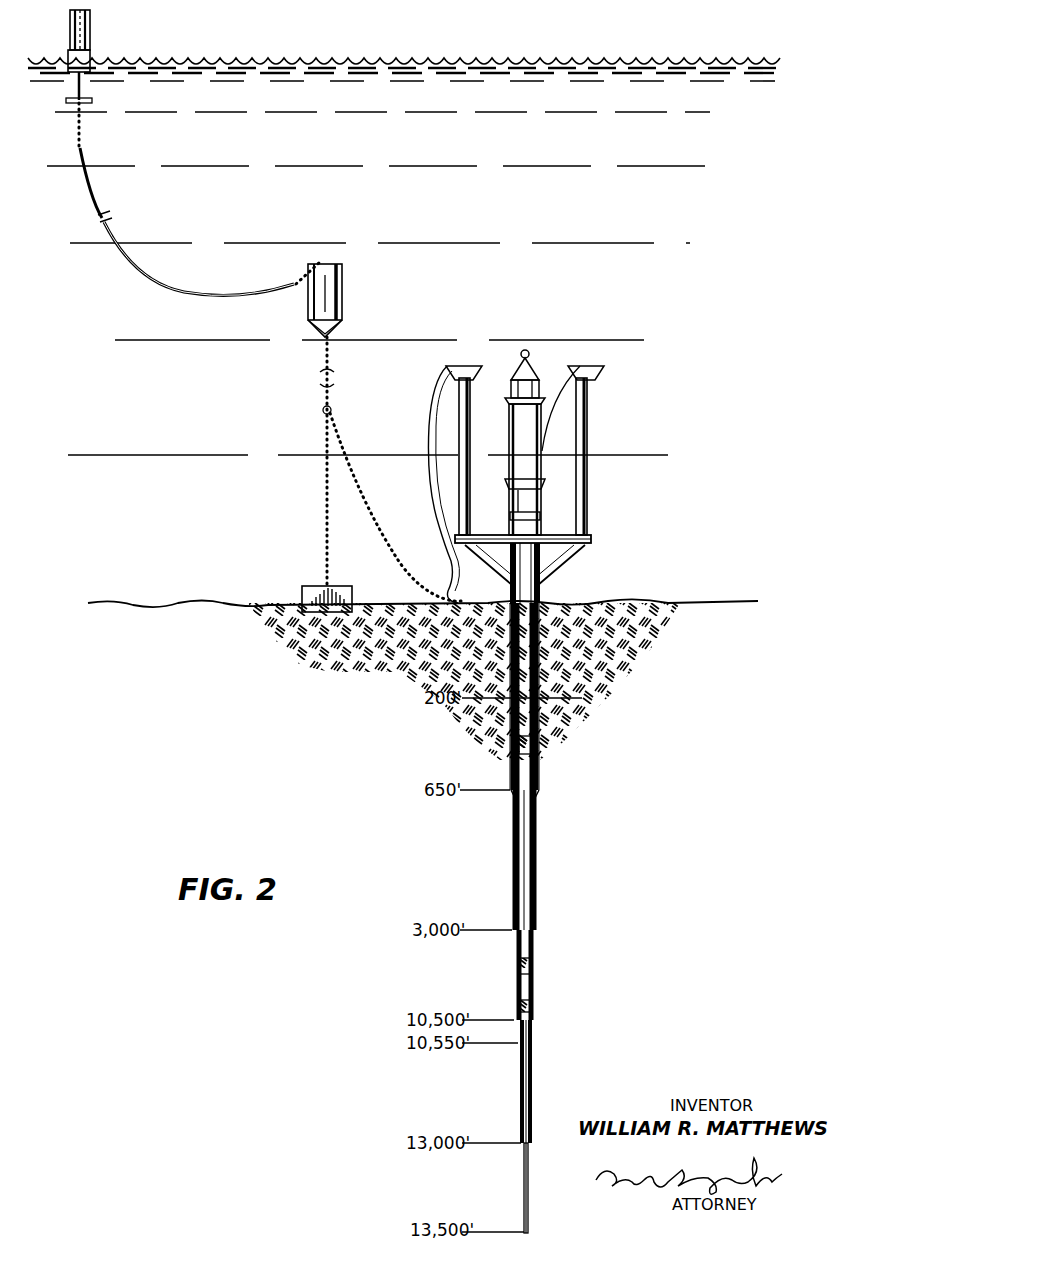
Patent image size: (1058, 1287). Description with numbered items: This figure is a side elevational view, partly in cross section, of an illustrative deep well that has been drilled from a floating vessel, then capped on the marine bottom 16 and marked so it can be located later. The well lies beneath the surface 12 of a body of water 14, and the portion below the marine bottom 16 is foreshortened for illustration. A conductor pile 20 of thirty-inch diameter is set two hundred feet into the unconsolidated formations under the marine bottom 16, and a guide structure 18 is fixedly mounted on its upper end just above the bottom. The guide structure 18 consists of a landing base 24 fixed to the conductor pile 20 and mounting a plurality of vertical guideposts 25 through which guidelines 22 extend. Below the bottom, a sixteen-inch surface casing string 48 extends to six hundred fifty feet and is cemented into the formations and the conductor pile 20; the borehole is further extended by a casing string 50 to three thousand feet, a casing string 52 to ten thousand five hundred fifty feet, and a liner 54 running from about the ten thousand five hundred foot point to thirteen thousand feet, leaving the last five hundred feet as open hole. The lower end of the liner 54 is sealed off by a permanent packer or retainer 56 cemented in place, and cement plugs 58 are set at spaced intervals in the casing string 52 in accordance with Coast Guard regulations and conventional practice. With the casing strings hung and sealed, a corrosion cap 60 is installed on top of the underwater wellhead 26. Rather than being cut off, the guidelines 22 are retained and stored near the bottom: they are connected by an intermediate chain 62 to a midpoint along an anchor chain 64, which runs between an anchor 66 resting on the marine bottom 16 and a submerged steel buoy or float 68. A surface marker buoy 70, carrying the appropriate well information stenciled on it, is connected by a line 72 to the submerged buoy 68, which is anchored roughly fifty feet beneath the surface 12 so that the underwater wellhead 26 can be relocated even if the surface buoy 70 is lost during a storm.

The surface 12 is at (570, 62).
The body of water 14 is at (510, 210).
The marine bottom 16 is at (660, 603).
The guide structure 18 is at (592, 535).
The conductor pile 20 is at (541, 582).
The guidelines 22 is at (433, 412).
The landing base 24 is at (576, 548).
The vertical guideposts 25 is at (471, 425).
The underwater wellhead 26 is at (510, 467).
The casing string 48 is at (511, 746).
The casing string 50 is at (511, 826).
The casing string 52 is at (534, 946).
The liner 54 is at (521, 1092).
The permanent packer or retainer 56 is at (531, 1134).
The cement plugs 58 is at (538, 742).
The corrosion cap 60 is at (532, 363).
The intermediate chain 62 is at (358, 513).
The anchor chain 64 is at (324, 493).
The anchor 66 is at (316, 590).
The submerged steel buoy or float 68 is at (343, 300).
The surface marker buoy 70 is at (92, 54).
The line 72 is at (99, 192).